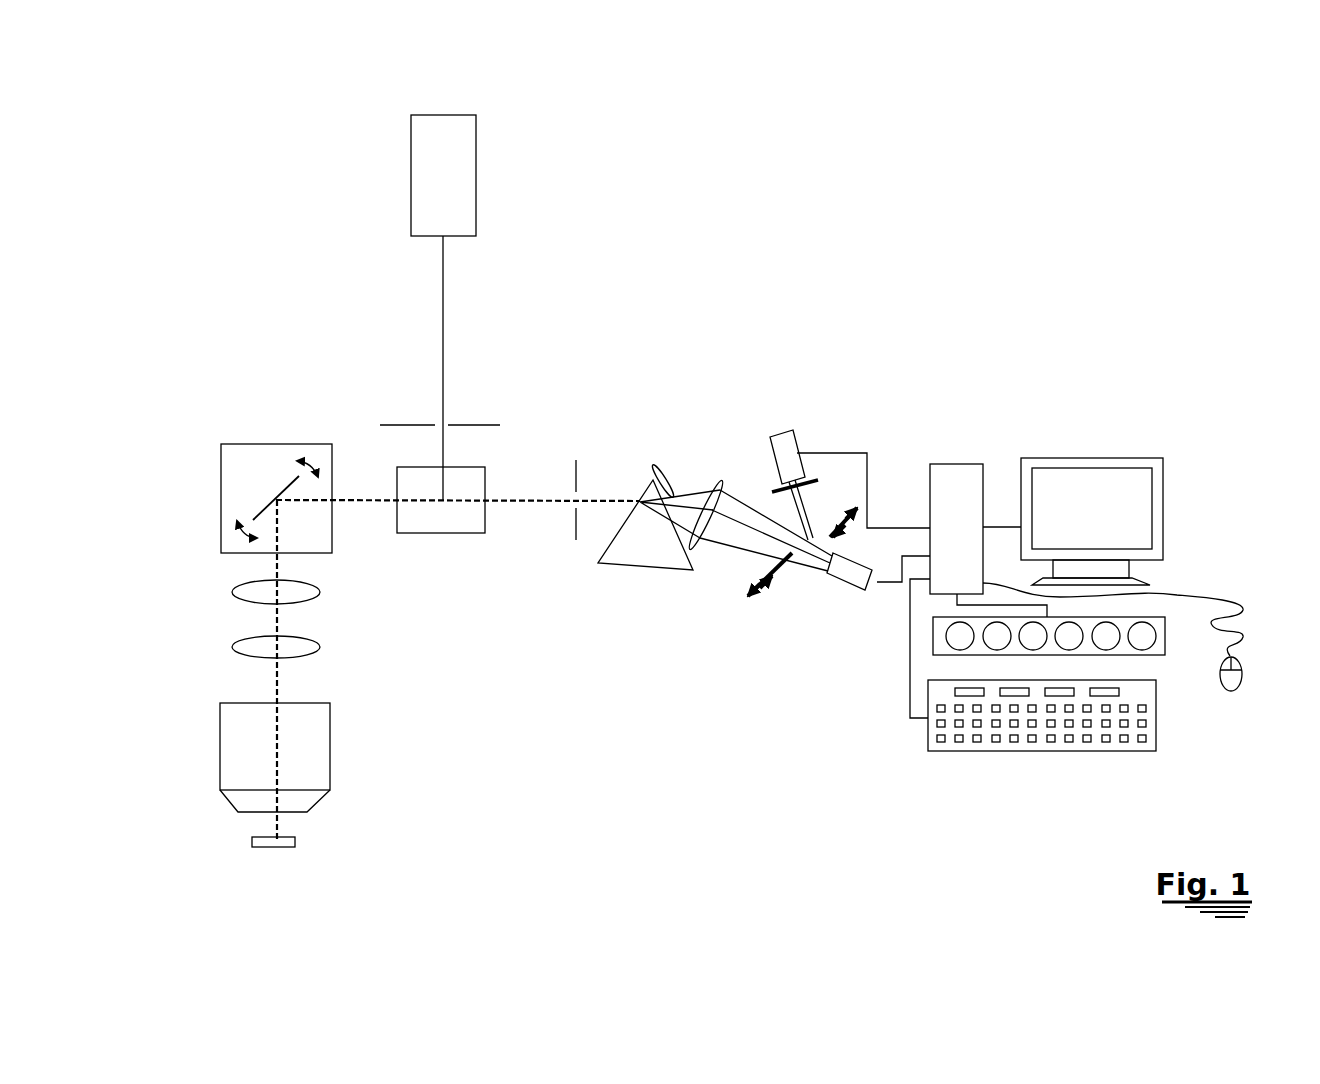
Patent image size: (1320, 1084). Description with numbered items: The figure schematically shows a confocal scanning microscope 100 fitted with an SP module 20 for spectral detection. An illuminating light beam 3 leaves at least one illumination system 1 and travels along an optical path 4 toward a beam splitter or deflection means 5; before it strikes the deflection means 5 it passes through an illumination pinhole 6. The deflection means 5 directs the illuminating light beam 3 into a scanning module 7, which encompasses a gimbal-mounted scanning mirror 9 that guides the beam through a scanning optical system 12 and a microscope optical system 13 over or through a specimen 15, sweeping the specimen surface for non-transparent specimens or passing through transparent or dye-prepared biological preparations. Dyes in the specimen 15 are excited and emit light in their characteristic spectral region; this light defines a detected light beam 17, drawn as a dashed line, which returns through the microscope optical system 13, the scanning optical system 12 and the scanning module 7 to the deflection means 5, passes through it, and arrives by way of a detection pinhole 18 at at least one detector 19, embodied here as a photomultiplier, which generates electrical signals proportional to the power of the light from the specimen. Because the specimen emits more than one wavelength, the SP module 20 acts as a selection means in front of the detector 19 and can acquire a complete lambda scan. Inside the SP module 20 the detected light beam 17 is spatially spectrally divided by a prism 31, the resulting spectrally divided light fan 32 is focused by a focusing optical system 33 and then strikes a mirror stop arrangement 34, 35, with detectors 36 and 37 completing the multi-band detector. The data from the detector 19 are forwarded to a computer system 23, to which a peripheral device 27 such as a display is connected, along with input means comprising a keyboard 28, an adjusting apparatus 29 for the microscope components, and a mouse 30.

The confocal scanning microscope 100 is at (515, 384).
The illumination system 1 is at (465, 155).
The illuminating light beam 3 is at (443, 268).
The optical path 4 is at (443, 395).
The deflection means 5 is at (463, 529).
The illumination pinhole 6 is at (396, 425).
The scanning module 7 is at (243, 467).
The scanning mirror 9 is at (262, 505).
The scanning optical system 12 is at (245, 648).
The microscope optical system 13 is at (240, 728).
The specimen 15 is at (262, 836).
The detected light beam 17 is at (486, 499).
The detection pinhole 18 is at (580, 472).
The detector 19 is at (675, 631).
The SP module 20 is at (731, 512).
The computer system 23 is at (970, 478).
The peripheral device 27 is at (1070, 480).
The keyboard 28 is at (1140, 694).
The adjusting apparatus 29 is at (1090, 622).
The mouse 30 is at (1228, 686).
The prism 31 is at (643, 561).
The spectrally divided light fan 32 is at (675, 481).
The focusing optical system 33 is at (692, 547).
The mirror stop arrangement 34 is at (783, 563).
The mirror stop arrangement 35 is at (832, 525).
The detector 36 is at (822, 575).
The detector 37 is at (777, 434).